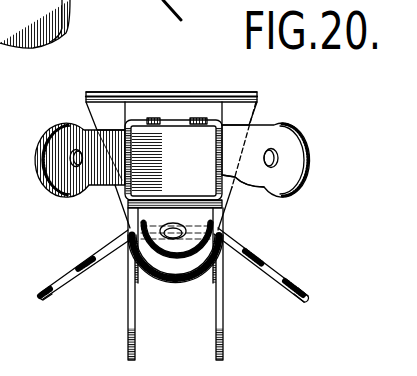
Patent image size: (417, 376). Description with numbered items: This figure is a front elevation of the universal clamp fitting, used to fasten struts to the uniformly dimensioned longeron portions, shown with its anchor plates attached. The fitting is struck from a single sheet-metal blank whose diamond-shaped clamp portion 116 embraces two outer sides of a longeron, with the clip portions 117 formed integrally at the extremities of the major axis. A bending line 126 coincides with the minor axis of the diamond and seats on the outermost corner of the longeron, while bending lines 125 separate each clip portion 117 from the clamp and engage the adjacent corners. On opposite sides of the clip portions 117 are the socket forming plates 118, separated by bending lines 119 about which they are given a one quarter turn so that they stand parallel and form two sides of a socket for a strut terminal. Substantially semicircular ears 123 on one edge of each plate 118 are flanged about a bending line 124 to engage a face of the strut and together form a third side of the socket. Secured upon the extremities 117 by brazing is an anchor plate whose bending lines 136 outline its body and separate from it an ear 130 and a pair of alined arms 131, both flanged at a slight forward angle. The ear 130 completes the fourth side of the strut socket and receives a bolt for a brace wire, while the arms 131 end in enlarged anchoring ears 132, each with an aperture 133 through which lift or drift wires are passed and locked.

The diamond-shaped clamp portion 116 is at (240, 92).
The clip portions 117 is at (196, 95).
The socket forming plates 118 is at (211, 157).
The bending lines 119 is at (129, 240).
The semicircular ears 123 is at (204, 118).
The bending line 124 is at (222, 274).
The bending lines 125 is at (157, 89).
The bending line 126 is at (252, 106).
The ear 130 is at (232, 250).
The alined arms 131 is at (108, 185).
The anchoring ears 132 is at (302, 174).
The aperture 133 is at (71, 156).
The bending lines 136 is at (268, 196).